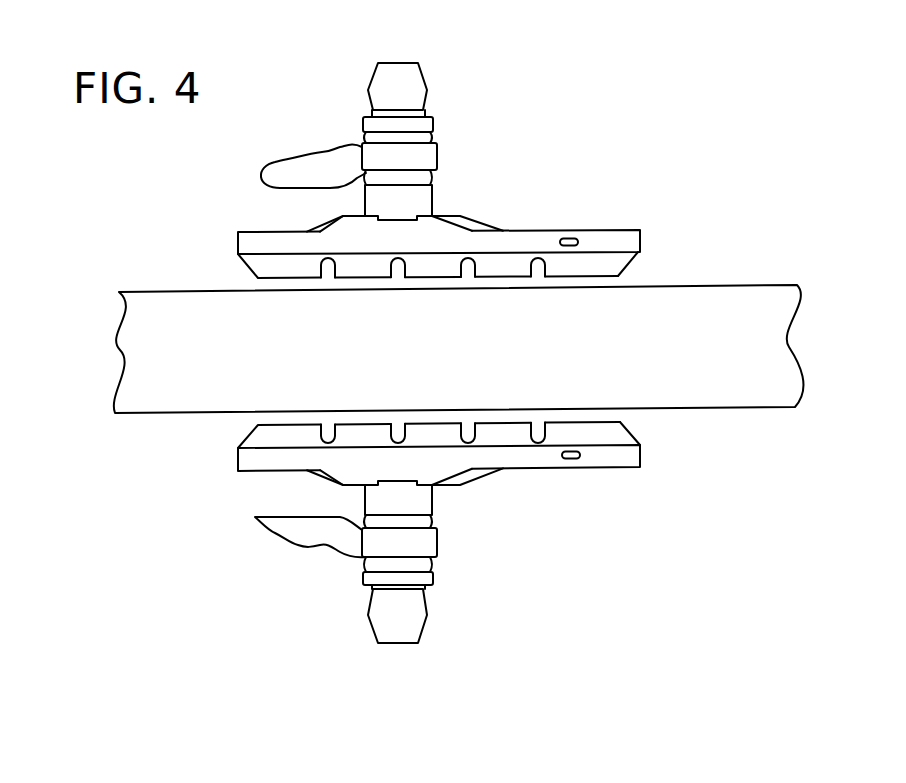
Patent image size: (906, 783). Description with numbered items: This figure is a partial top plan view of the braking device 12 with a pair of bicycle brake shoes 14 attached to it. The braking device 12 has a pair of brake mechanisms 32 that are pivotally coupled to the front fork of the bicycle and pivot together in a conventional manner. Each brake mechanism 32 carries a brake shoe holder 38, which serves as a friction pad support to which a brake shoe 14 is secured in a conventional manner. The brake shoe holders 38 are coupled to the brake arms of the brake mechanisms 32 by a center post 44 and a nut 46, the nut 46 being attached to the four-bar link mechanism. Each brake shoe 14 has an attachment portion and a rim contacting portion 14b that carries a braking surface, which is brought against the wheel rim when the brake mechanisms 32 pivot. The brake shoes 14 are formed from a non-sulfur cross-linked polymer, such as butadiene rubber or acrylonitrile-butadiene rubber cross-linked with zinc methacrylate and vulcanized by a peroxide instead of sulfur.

The braking device 12 is at (697, 90).
The bicycle brake shoe 14 is at (236, 267).
The rim contacting portion 14b is at (634, 268).
The brake mechanism 32 is at (467, 145).
The brake shoe holder 38 is at (267, 216).
The center post 44 is at (364, 202).
The nut 46 is at (427, 88).